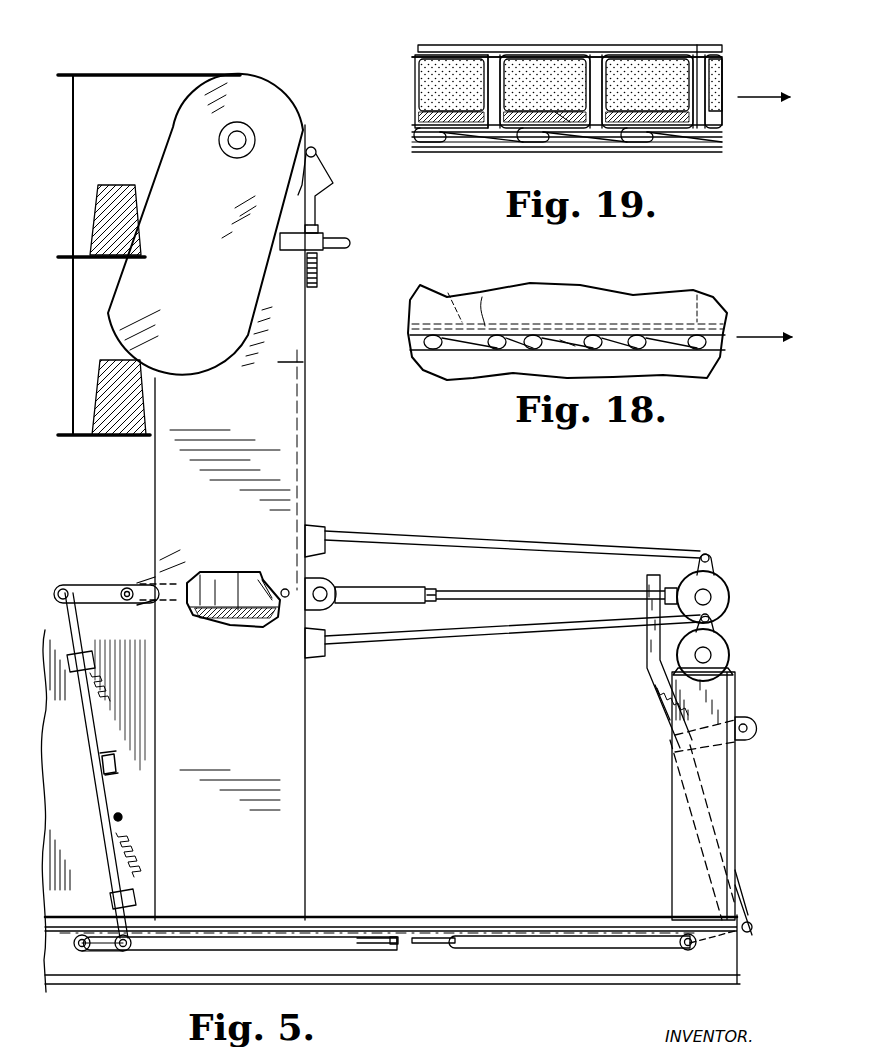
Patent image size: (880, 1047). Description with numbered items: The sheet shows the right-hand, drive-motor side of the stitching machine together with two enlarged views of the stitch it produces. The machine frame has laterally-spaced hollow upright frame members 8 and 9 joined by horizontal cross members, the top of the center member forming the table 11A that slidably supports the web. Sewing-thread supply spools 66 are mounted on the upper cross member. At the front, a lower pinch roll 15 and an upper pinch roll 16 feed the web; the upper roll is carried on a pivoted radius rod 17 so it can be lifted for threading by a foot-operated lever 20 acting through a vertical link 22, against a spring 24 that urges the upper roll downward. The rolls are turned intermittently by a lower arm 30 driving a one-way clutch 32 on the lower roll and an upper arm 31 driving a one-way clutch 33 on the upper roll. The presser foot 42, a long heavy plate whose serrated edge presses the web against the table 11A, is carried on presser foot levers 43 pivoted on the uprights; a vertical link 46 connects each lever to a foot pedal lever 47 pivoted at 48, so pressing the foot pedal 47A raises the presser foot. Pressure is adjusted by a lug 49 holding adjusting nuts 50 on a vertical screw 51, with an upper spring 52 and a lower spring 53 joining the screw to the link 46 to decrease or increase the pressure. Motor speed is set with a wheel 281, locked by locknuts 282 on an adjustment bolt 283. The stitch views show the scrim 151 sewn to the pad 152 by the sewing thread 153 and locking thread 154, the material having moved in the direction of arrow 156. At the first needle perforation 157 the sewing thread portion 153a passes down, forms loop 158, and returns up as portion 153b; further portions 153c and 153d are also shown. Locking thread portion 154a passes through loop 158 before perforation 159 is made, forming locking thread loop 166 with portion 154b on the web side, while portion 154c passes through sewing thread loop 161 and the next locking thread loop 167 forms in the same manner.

In FIG. 5, the upright frame member 8 is at (282, 424).
In FIG. 5, the upright frame member 9 is at (305, 125).
In FIG. 5, the table 11A is at (230, 585).
In FIG. 5, the lower pinch roll 15 is at (730, 652).
In FIG. 5, the upper pinch roll 16 is at (730, 593).
In FIG. 5, the radius rod 17 is at (483, 588).
In FIG. 5, the foot-operated lever 20 is at (530, 950).
In FIG. 5, the vertical link 22 is at (648, 672).
In FIG. 5, the spring 24 is at (660, 716).
In FIG. 5, the lower arm 30 is at (458, 640).
In FIG. 5, the upper arm 31 is at (478, 542).
In FIG. 5, the one-way clutch 32 is at (717, 636).
In FIG. 5, the one-way clutch 33 is at (712, 578).
In FIG. 5, the presser foot 42 is at (268, 590).
In FIG. 5, the presser foot lever 43 is at (102, 592).
In FIG. 5, the vertical link 46 is at (98, 792).
In FIG. 5, the foot pedal lever 47 is at (212, 950).
In FIG. 5, the foot pedal 47A is at (380, 937).
In FIG. 5, the pivotal mounting 48 is at (82, 951).
In FIG. 5, the lug 49 is at (115, 763).
In FIG. 5, the adjusting nut 50 is at (112, 756).
In FIG. 5, the screw 51 is at (120, 815).
In FIG. 5, the upper spring 52 is at (100, 686).
In FIG. 5, the lower spring 53 is at (128, 848).
In FIG. 5, the sewing-thread supply spool 66 is at (101, 190).
In FIG. 5, the wheel 281 is at (340, 243).
In FIG. 5, the locknut 282 is at (319, 229).
In FIG. 5, the adjustment bolt 283 is at (318, 208).
In FIG. 19, the scrim 151 is at (413, 100).
In FIG. 19, the pad 152 is at (462, 87).
In FIG. 19, the sewing thread 153 is at (443, 57).
In FIG. 18, the sewing thread 153 is at (445, 292).
In FIG. 19, the sewing thread portion 153a is at (718, 100).
In FIG. 18, the sewing thread portion 153a is at (715, 355).
In FIG. 19, the sewing thread portion 153b is at (667, 80).
In FIG. 18, the sewing thread portion 153b is at (697, 296).
In FIG. 19, the frame wall 153c is at (602, 63).
In FIG. 19, the frame wall 153d is at (567, 62).
In FIG. 19, the locking thread 154 is at (450, 147).
In FIG. 18, the locking thread 154 is at (480, 350).
In FIG. 19, the locking thread portion 154a is at (622, 143).
In FIG. 18, the locking thread portion 154a is at (608, 331).
In FIG. 19, the locking thread portion 154b is at (615, 133).
In FIG. 18, the locking thread portion 154b is at (600, 348).
In FIG. 19, the locking thread portion 154c is at (523, 143).
In FIG. 18, the locking thread portion 154c is at (520, 331).
In FIG. 19, the arrow 156 is at (757, 100).
In FIG. 18, the arrow 156 is at (760, 332).
In FIG. 19, the needle perforation 157 is at (698, 70).
In FIG. 19, the sewing thread loop 158 is at (642, 150).
In FIG. 18, the sewing thread loop 158 is at (638, 332).
In FIG. 19, the needle perforation 159 is at (591, 70).
In FIG. 19, the sewing thread loop 161 is at (538, 150).
In FIG. 18, the sewing thread loop 161 is at (530, 330).
In FIG. 19, the locking thread loop 166 is at (564, 111).
In FIG. 18, the locking thread loop 166 is at (580, 332).
In FIG. 19, the locking thread loop 167 is at (479, 113).
In FIG. 18, the locking thread loop 167 is at (482, 297).